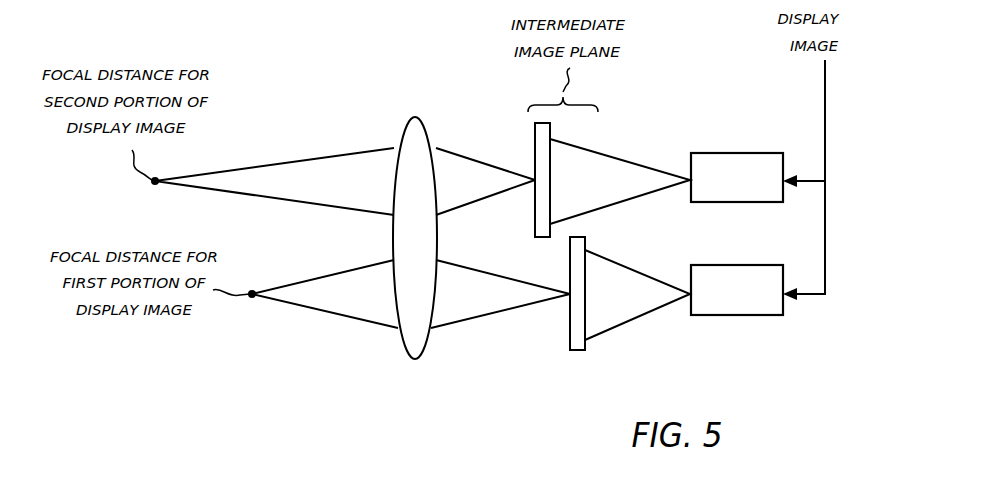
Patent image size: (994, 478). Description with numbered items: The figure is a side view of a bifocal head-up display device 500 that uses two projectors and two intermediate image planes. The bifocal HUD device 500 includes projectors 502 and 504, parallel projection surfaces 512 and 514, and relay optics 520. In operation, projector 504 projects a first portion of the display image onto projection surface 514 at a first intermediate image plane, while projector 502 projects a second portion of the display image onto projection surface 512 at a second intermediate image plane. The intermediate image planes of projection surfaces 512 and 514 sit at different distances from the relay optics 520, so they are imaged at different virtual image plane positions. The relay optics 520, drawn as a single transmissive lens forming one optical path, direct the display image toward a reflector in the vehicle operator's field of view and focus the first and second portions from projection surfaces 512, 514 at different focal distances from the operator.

The bifocal HUD device 500 is at (176, 420).
The projector 502 is at (733, 152).
The projector 504 is at (733, 264).
The projection surface 512 is at (533, 204).
The projection surface 514 is at (569, 316).
The relay optics 520 is at (428, 123).